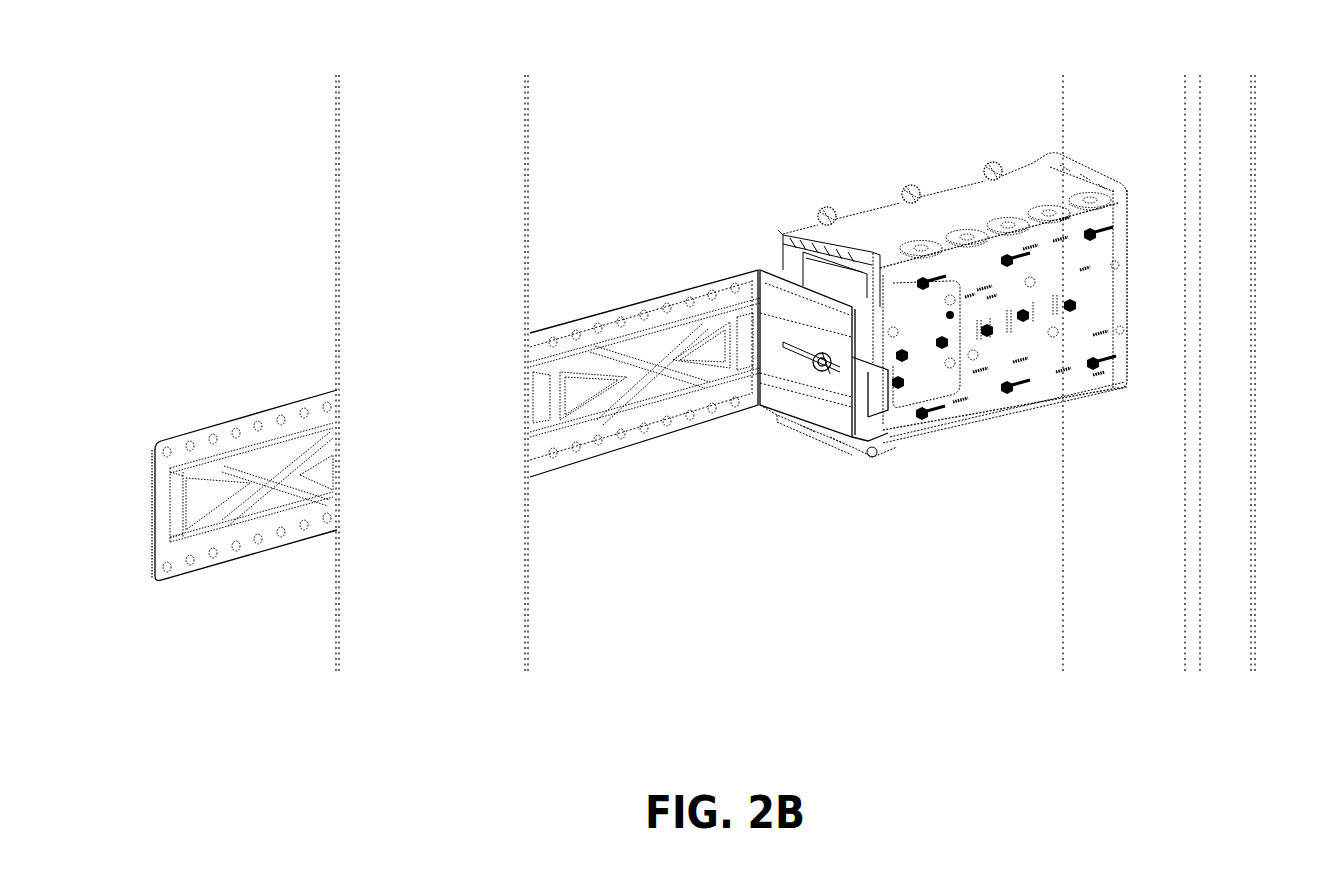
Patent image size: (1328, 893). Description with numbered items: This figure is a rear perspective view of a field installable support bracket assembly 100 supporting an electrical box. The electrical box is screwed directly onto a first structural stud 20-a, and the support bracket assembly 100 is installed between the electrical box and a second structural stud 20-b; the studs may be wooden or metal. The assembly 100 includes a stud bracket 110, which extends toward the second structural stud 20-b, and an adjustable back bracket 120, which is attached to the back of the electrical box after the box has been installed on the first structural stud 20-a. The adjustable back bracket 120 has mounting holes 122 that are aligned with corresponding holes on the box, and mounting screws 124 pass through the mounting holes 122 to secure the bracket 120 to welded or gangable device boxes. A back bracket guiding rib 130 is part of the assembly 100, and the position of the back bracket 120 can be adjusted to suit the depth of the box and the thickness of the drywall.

The first structural stud 20-a is at (1062, 500).
The second structural stud 20-b is at (527, 160).
The field installable support bracket assembly 100 is at (683, 447).
The stud bracket 110 is at (250, 415).
The adjustable back bracket 120 is at (898, 310).
The mounting holes 122 is at (958, 323).
The mounting screws 124 is at (948, 313).
The back bracket guiding rib 130 is at (877, 403).